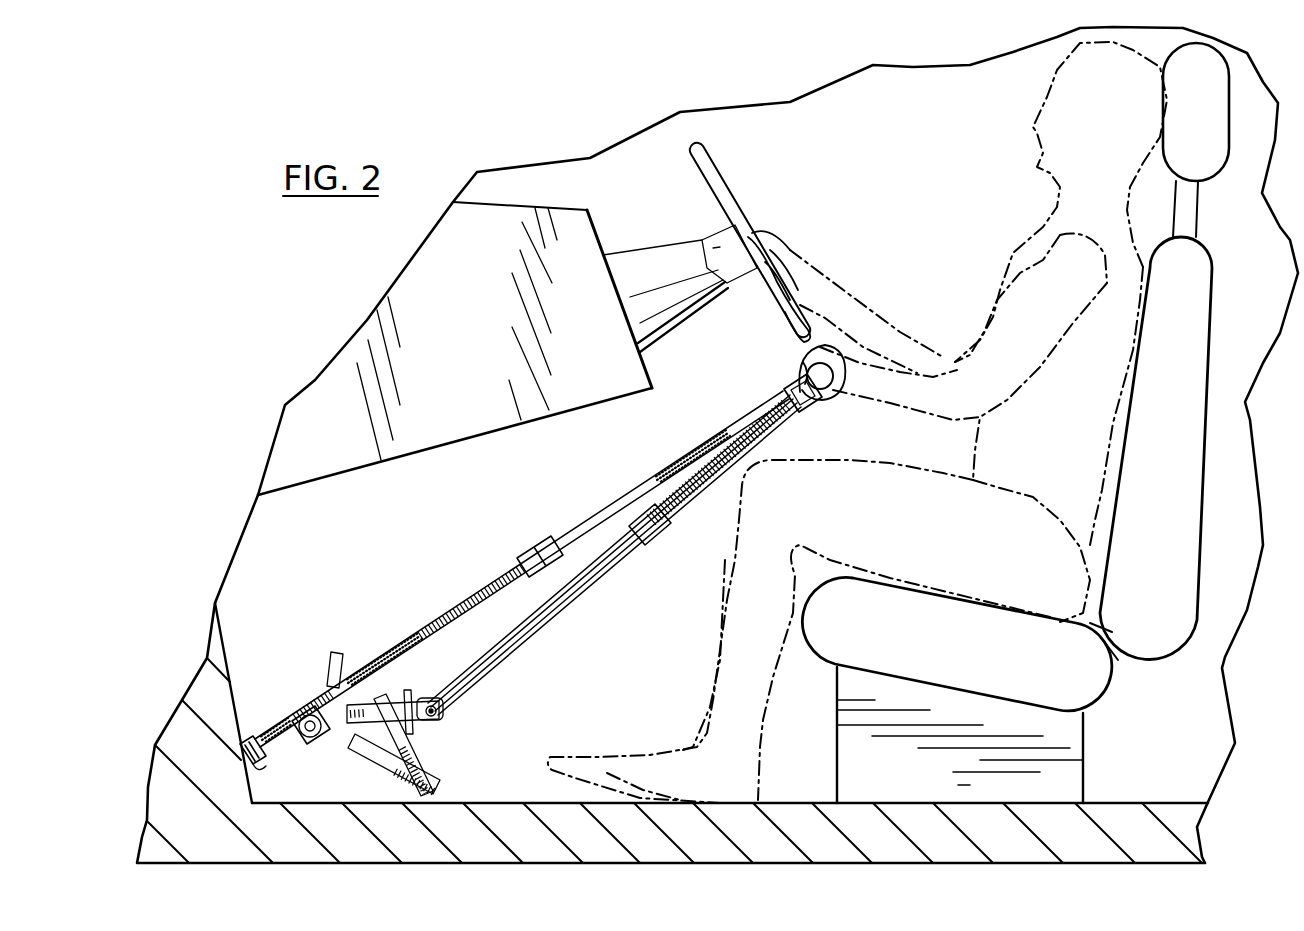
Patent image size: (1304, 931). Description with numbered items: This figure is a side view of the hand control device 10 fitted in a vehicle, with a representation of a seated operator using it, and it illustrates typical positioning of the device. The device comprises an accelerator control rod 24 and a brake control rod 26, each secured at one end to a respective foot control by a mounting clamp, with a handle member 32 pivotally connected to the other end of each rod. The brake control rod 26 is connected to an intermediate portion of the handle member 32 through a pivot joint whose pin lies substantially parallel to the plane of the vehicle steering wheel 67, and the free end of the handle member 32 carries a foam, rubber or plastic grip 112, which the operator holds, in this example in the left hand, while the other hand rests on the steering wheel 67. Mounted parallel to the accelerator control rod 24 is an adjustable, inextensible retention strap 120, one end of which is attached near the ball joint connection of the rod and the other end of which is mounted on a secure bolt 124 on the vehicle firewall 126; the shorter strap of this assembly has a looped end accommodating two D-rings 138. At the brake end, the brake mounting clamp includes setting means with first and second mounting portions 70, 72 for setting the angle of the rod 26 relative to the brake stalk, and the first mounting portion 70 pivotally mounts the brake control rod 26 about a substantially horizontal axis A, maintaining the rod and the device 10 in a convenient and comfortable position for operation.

The hand control device 10 is at (525, 561).
The accelerator control rod 24 is at (522, 569).
The brake control rod 26 is at (582, 603).
The handle member 32 is at (808, 350).
The vehicle steering wheel 67 is at (735, 200).
The first mounting portion 70 is at (441, 714).
The second mounting portion 72 is at (386, 742).
The grip 112 is at (806, 372).
The retention strap 120 is at (403, 638).
The secure bolt 124 is at (252, 770).
The firewall 126 is at (224, 622).
The D-rings 138 is at (322, 688).
The horizontal axis A is at (440, 722).